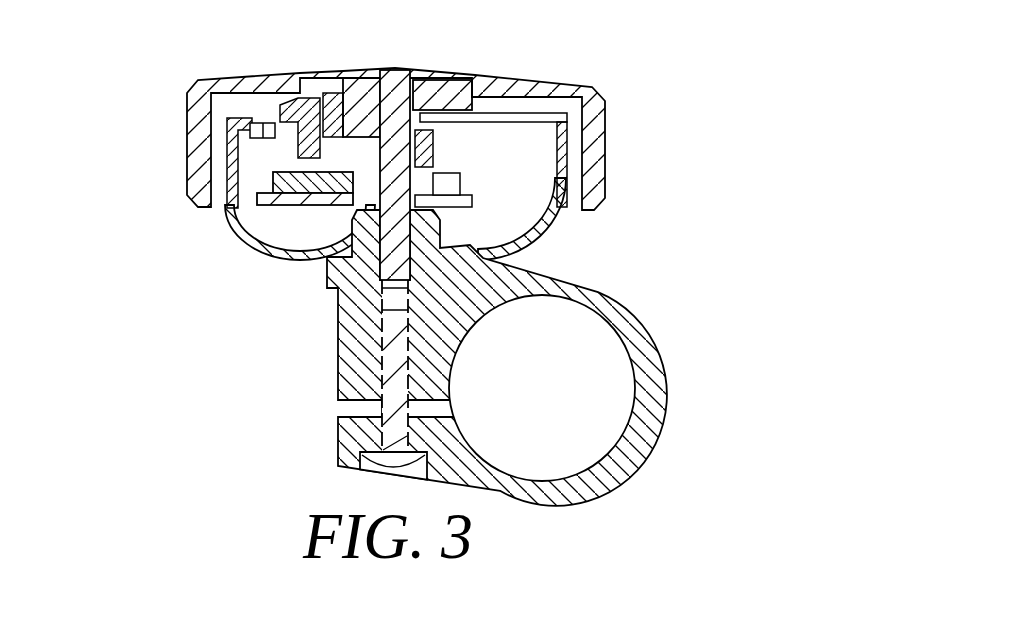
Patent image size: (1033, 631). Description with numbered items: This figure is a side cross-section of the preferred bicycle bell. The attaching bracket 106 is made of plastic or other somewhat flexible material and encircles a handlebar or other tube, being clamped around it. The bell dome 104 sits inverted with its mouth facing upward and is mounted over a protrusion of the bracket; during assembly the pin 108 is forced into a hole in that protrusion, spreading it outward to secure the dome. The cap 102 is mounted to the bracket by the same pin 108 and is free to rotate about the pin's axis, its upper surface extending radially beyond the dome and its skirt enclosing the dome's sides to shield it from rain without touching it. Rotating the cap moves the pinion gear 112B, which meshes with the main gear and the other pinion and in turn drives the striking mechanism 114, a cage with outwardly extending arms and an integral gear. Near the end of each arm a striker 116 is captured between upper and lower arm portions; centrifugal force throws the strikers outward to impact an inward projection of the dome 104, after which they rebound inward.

The cap 102 is at (578, 80).
The bell dome 104 is at (558, 230).
The attaching bracket 106 is at (632, 466).
The pin 108 is at (396, 72).
The pinion gear 112B is at (252, 137).
The striking mechanism 114 is at (294, 213).
The striker 116 is at (265, 186).